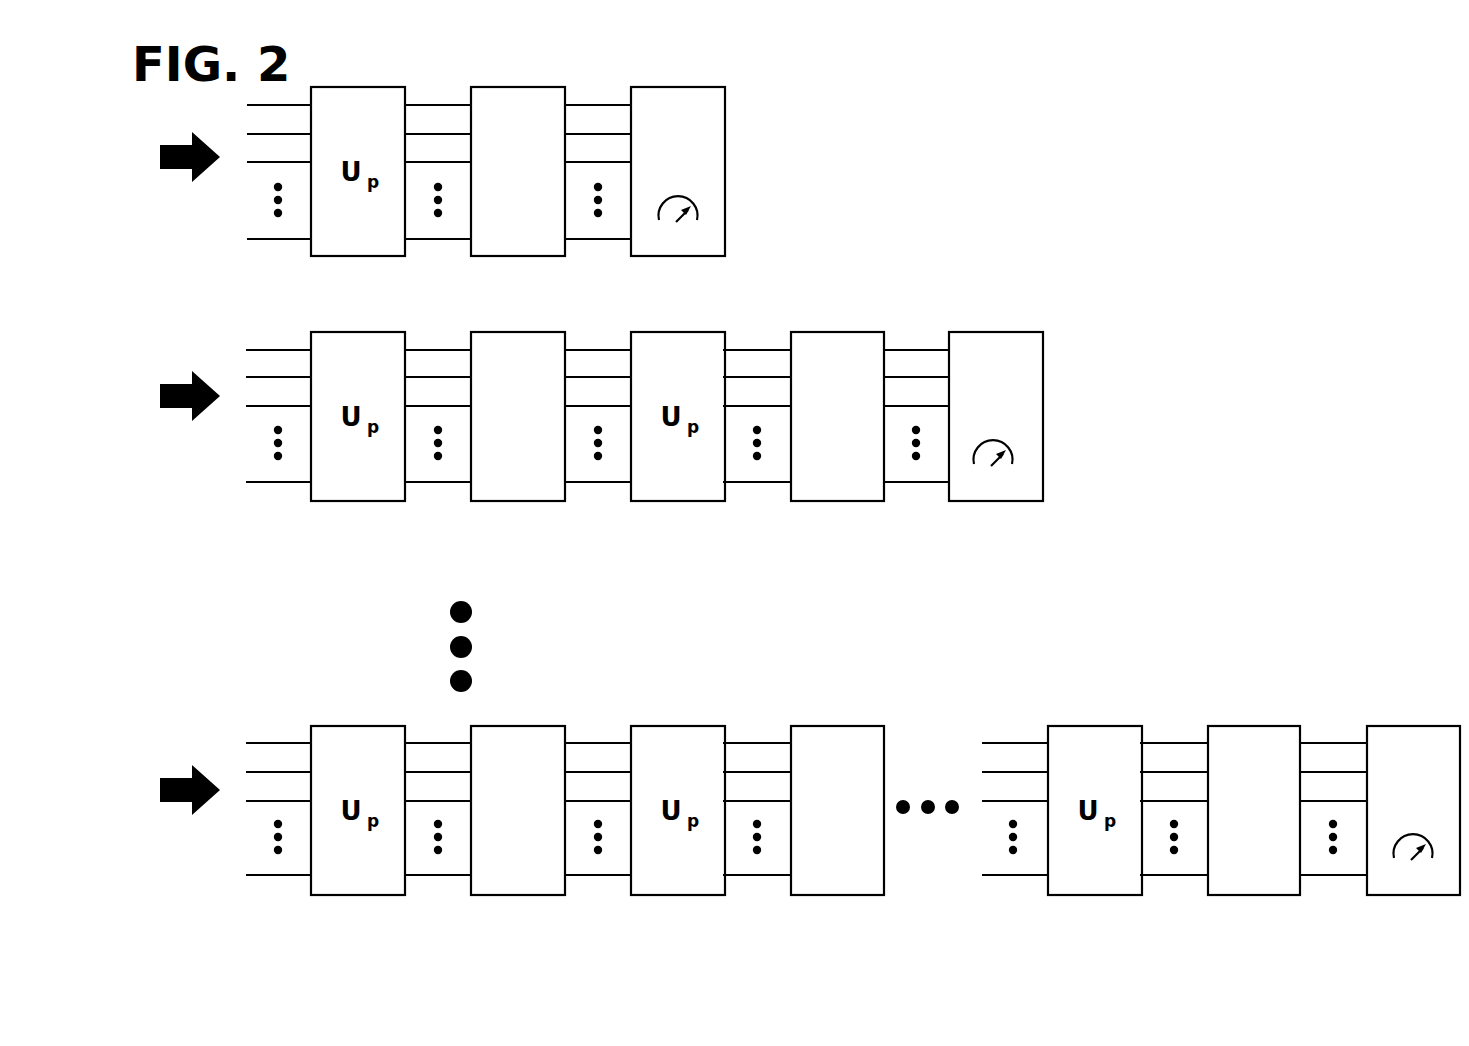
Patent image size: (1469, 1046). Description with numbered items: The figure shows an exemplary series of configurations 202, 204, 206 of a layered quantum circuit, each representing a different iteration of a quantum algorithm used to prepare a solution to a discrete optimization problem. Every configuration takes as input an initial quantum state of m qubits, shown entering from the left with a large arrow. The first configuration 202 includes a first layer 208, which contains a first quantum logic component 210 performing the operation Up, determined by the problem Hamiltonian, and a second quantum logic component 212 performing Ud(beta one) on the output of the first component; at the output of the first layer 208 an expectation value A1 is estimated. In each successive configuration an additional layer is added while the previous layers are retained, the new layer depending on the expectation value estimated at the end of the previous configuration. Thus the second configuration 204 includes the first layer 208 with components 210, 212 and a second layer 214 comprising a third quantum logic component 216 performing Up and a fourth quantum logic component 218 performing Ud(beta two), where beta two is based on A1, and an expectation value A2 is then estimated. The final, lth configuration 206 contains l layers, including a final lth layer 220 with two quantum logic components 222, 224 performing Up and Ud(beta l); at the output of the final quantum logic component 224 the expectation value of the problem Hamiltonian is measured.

The first configuration 202 is at (830, 104).
The second configuration 204 is at (1175, 366).
The lth configuration 206 is at (1202, 603).
The first layer 208 is at (565, 265).
The first quantum logic component 210 is at (360, 87).
The second quantum logic component 212 is at (518, 87).
The second layer 214 is at (634, 508).
The third quantum logic component 216 is at (674, 332).
The fourth quantum logic component 218 is at (834, 332).
The lth layer 220 is at (1050, 904).
The quantum logic component 222 is at (1094, 726).
The final quantum logic component 224 is at (1250, 726).